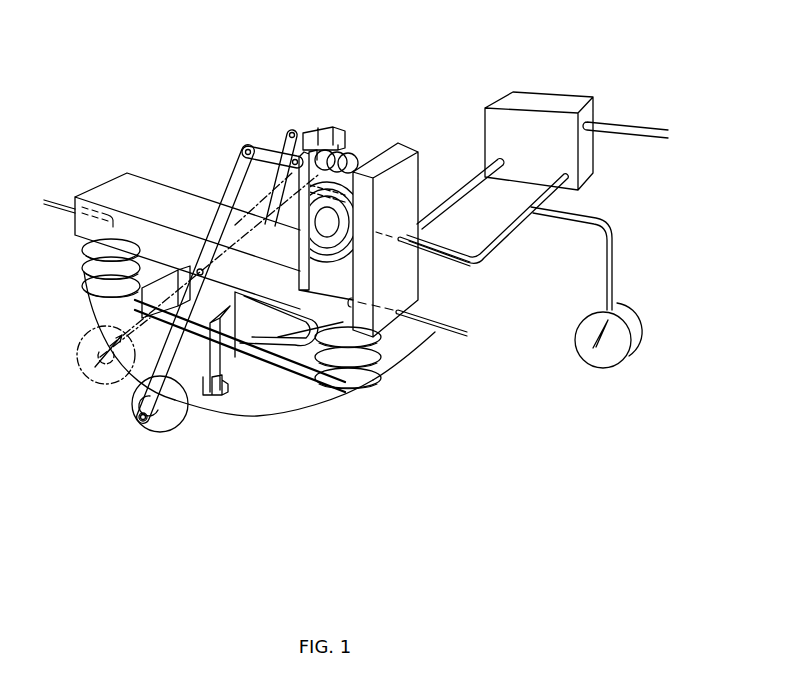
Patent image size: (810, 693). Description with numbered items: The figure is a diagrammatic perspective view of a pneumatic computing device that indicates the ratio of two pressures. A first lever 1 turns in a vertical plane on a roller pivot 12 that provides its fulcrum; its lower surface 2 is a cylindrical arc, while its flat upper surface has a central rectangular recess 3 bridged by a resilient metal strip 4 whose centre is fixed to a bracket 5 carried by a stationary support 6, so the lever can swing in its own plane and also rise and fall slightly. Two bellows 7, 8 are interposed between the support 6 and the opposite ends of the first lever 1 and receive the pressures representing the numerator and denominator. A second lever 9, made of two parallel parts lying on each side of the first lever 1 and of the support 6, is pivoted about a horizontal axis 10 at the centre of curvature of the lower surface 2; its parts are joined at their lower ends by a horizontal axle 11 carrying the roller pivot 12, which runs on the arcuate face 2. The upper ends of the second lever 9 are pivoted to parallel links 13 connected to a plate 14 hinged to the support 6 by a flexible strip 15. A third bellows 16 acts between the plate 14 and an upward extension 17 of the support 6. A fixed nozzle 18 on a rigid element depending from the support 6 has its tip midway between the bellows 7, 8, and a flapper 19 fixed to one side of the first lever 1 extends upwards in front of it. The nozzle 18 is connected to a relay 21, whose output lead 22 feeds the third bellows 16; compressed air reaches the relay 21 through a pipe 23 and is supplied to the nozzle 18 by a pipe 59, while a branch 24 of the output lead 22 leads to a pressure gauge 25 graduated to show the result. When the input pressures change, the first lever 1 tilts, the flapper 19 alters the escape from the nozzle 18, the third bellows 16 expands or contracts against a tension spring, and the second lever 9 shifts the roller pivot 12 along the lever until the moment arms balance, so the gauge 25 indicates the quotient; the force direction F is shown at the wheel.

The first lever 1 is at (288, 402).
The lower surface 2 is at (240, 413).
The rectangular recess 3 is at (345, 402).
The resilient metal strip 4 is at (158, 300).
The bracket 5 is at (212, 302).
The stationary support 6 is at (172, 195).
The bellows 7 is at (105, 277).
The bellows 8 is at (377, 352).
The second lever 9 is at (290, 132).
The horizontal axis 10 is at (198, 268).
The horizontal axle 11 is at (154, 418).
The roller pivot 12 is at (174, 417).
The parallel links 13 is at (327, 133).
The plate 14 is at (350, 157).
The flexible strip 15 is at (306, 274).
The third bellows 16 is at (332, 240).
The upward extension 17 is at (420, 160).
The nozzle 18 is at (235, 355).
The flapper 19 is at (270, 317).
The relay 21 is at (549, 100).
The output lead 22 is at (511, 228).
The pipe 23 is at (638, 128).
The branch 24 is at (573, 221).
The pressure gauge 25 is at (378, 150).
The pipe 59 is at (477, 180).
The force direction F is at (140, 390).